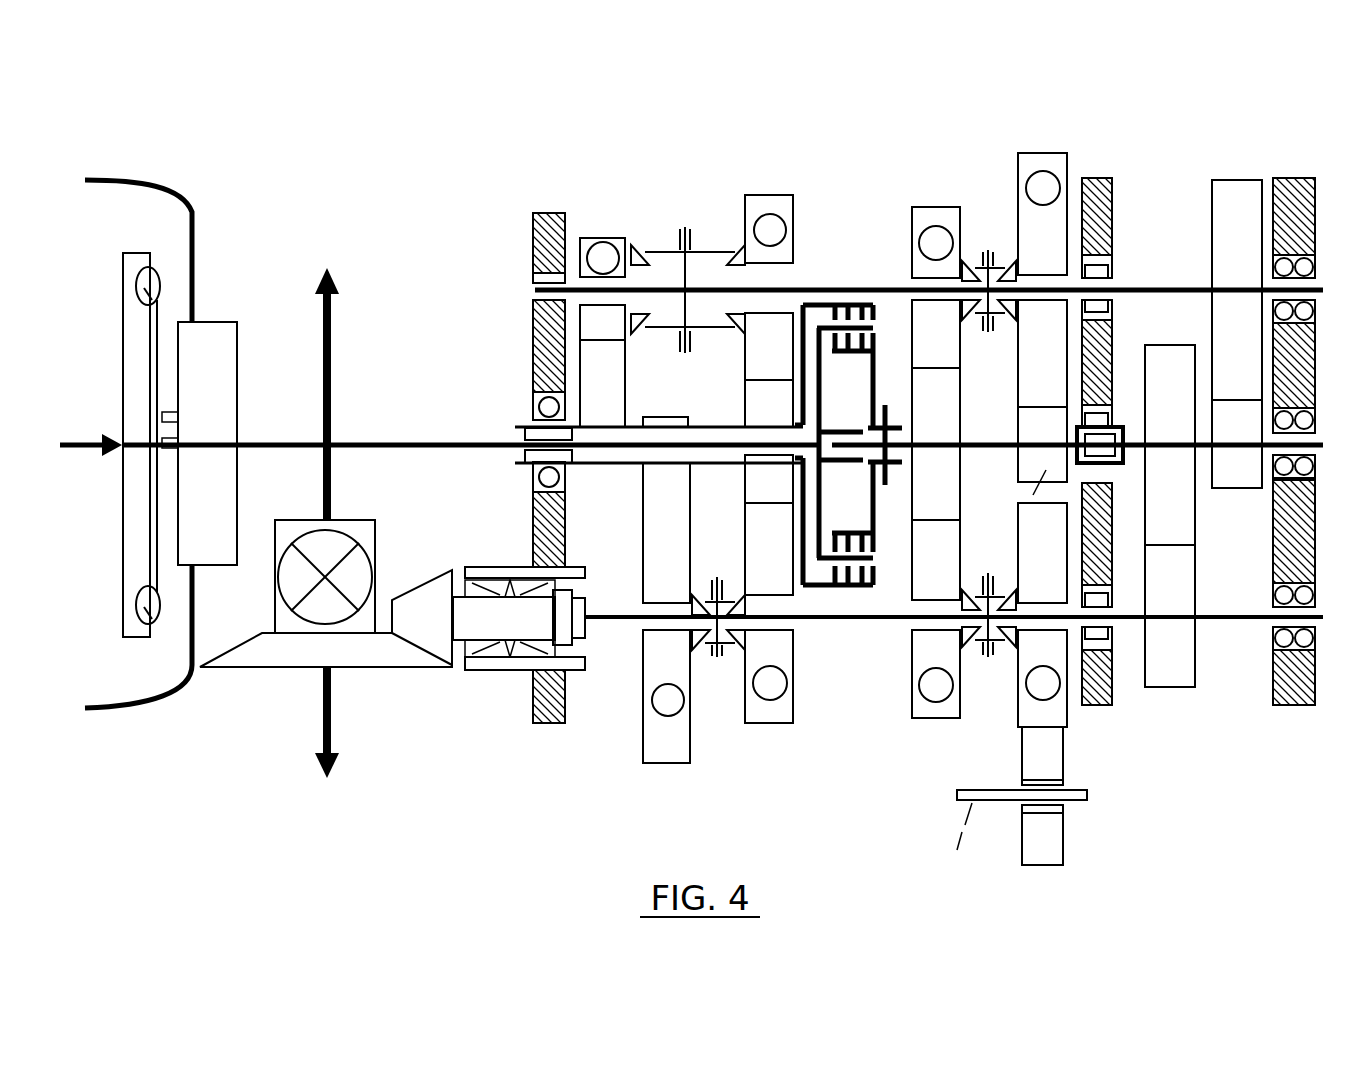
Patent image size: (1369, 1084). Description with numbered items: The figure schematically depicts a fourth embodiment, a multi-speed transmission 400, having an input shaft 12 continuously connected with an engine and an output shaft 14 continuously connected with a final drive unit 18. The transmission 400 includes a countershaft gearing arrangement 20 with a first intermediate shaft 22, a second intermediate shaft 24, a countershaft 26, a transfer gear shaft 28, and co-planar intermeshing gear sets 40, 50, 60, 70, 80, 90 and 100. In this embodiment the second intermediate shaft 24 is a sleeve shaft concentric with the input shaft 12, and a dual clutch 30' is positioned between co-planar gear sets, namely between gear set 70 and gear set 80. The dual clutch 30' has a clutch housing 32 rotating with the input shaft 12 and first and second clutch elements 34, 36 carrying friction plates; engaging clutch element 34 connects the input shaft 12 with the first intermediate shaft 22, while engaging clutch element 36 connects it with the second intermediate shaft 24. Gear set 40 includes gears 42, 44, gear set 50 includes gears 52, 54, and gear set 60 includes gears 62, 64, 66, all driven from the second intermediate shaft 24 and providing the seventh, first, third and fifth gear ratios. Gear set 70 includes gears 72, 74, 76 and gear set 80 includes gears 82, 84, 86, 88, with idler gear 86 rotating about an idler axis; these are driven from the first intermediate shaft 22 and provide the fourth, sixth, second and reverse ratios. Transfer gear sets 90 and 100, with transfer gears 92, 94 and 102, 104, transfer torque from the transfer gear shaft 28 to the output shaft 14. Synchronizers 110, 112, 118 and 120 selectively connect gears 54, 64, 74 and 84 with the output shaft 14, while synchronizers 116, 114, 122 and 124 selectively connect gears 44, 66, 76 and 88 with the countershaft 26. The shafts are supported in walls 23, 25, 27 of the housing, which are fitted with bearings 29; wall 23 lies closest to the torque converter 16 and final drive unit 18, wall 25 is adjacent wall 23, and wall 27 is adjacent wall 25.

The multi-speed transmission 400 is at (238, 178).
The input shaft 12 is at (430, 450).
The output shaft 14 is at (882, 622).
The torque converter 16 is at (123, 546).
The final drive unit 18 is at (478, 692).
The countershaft gearing arrangement 20 is at (1101, 171).
The first intermediate shaft 22 is at (982, 443).
The first wall 23 is at (540, 725).
The second intermediate shaft 24 is at (518, 427).
The second wall 25 is at (1096, 706).
The countershaft 26 is at (1142, 288).
The third wall 27 is at (1290, 706).
The transfer gear shaft 28 is at (1205, 452).
The bearings 29 is at (548, 395).
The dual clutch 30' is at (898, 427).
The clutch housing 32 is at (827, 586).
The first clutch element 34 is at (873, 513).
The second clutch element 36 is at (835, 305).
The gear set 40 is at (578, 289).
The gear 42 is at (590, 412).
The gear 44 is at (590, 335).
The gear set 50 is at (672, 651).
The gear 52 is at (668, 417).
The gear 54 is at (655, 665).
The gear set 60 is at (798, 420).
The gear 62 is at (757, 416).
The gear 64 is at (757, 560).
The gear 66 is at (757, 362).
The gear set 70 is at (932, 502).
The gear 72 is at (923, 419).
The gear 74 is at (923, 566).
The gear 76 is at (923, 349).
The gear set 80 is at (1022, 479).
The gear 82 is at (1030, 435).
The gear 84 is at (1030, 560).
The idler gear 86 is at (1035, 876).
The gear 88 is at (1030, 349).
The transfer gear set 90 is at (1173, 554).
The transfer gear 92 is at (1157, 418).
The transfer gear 94 is at (1157, 593).
The transfer gear set 100 is at (1265, 298).
The transfer gear 102 is at (1218, 480).
The transfer gear 104 is at (1218, 228).
The synchronizer 110 is at (701, 651).
The synchronizer 112 is at (738, 591).
The synchronizer 114 is at (706, 332).
The synchronizer 116 is at (641, 243).
The synchronizer 118 is at (976, 651).
The synchronizer 120 is at (1005, 590).
The synchronizer 122 is at (976, 326).
The synchronizer 124 is at (1004, 262).